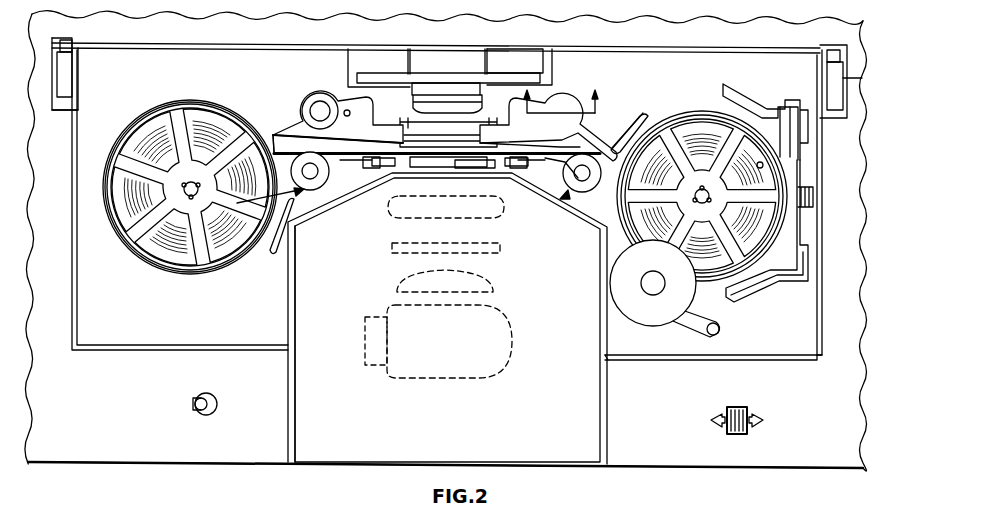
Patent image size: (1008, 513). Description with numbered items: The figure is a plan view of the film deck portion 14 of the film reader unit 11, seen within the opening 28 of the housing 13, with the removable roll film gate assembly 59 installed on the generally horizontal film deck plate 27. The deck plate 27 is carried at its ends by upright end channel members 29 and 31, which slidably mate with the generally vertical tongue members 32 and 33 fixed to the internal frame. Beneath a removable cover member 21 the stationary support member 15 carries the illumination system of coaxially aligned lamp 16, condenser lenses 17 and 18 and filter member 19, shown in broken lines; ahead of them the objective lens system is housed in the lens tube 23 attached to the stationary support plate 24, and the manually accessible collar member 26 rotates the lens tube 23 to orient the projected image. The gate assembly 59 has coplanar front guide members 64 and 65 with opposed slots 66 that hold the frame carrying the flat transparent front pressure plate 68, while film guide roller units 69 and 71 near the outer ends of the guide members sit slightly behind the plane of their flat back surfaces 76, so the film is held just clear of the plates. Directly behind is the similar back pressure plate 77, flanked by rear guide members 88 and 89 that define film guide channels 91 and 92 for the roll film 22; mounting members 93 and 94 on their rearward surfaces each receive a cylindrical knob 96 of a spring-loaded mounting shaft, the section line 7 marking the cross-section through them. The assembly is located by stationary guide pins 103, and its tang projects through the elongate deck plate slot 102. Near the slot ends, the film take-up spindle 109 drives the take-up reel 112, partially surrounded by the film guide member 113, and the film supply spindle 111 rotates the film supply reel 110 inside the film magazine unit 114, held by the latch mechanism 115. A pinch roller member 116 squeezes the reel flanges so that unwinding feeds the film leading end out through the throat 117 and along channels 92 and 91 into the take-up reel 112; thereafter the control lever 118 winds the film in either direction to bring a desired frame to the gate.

The section line 7- 7 is at (562, 113).
The film reader unit 11 is at (802, 473).
The housing 13 is at (788, 29).
The film deck portion 14 is at (783, 447).
The stationary support member 15 is at (302, 235).
The lamp 16 is at (368, 350).
The condenser lens 17 is at (400, 287).
The condenser lens 18 is at (410, 222).
The filter member 19 is at (405, 252).
The removable cover member 21 is at (580, 427).
The roll film 22 is at (445, 160).
The lens tube 23 is at (478, 58).
The stationary support plate 24 is at (523, 60).
The collar member 26 is at (400, 78).
The film deck plate 27 is at (768, 345).
The opening 28 is at (640, 360).
The upright end channel member 29 is at (828, 92).
The upright end channel member 31 is at (78, 95).
The tongue member 32 is at (830, 72).
The tongue member 33 is at (63, 75).
The roll film gate assembly 59 is at (598, 100).
The front guide member 64 is at (345, 165).
The front guide member 65 is at (567, 187).
The opposed slots 66 is at (400, 168).
The front pressure plate 68 is at (470, 165).
The film guide roller unit 69 is at (281, 240).
The film guide roller unit 71 is at (580, 200).
The flat back surfaces 76 is at (373, 176).
The back pressure plate 77 is at (430, 150).
The rear guide member 88 is at (296, 138).
The rear guide member 89 is at (603, 140).
The film guide channel 91 is at (270, 132).
The film guide channel 92 is at (622, 155).
The mounting member 93 is at (306, 99).
The mounting member 94 is at (555, 103).
The cylindrical knob 96 is at (320, 104).
The deck plate slot 102 is at (763, 165).
The stationary guide pins 103 is at (350, 114).
The film take-up spindle 109 is at (198, 190).
The film supply reel 110 is at (777, 208).
The film supply spindle 111 is at (709, 196).
The film take-up reel 112 is at (182, 268).
The film guide member 113 is at (167, 278).
The film magazine unit 114 is at (785, 130).
The latch mechanism 115 is at (733, 95).
The pinch roller member 116 is at (640, 320).
The throat 117 is at (632, 254).
The control lever 118 is at (737, 436).